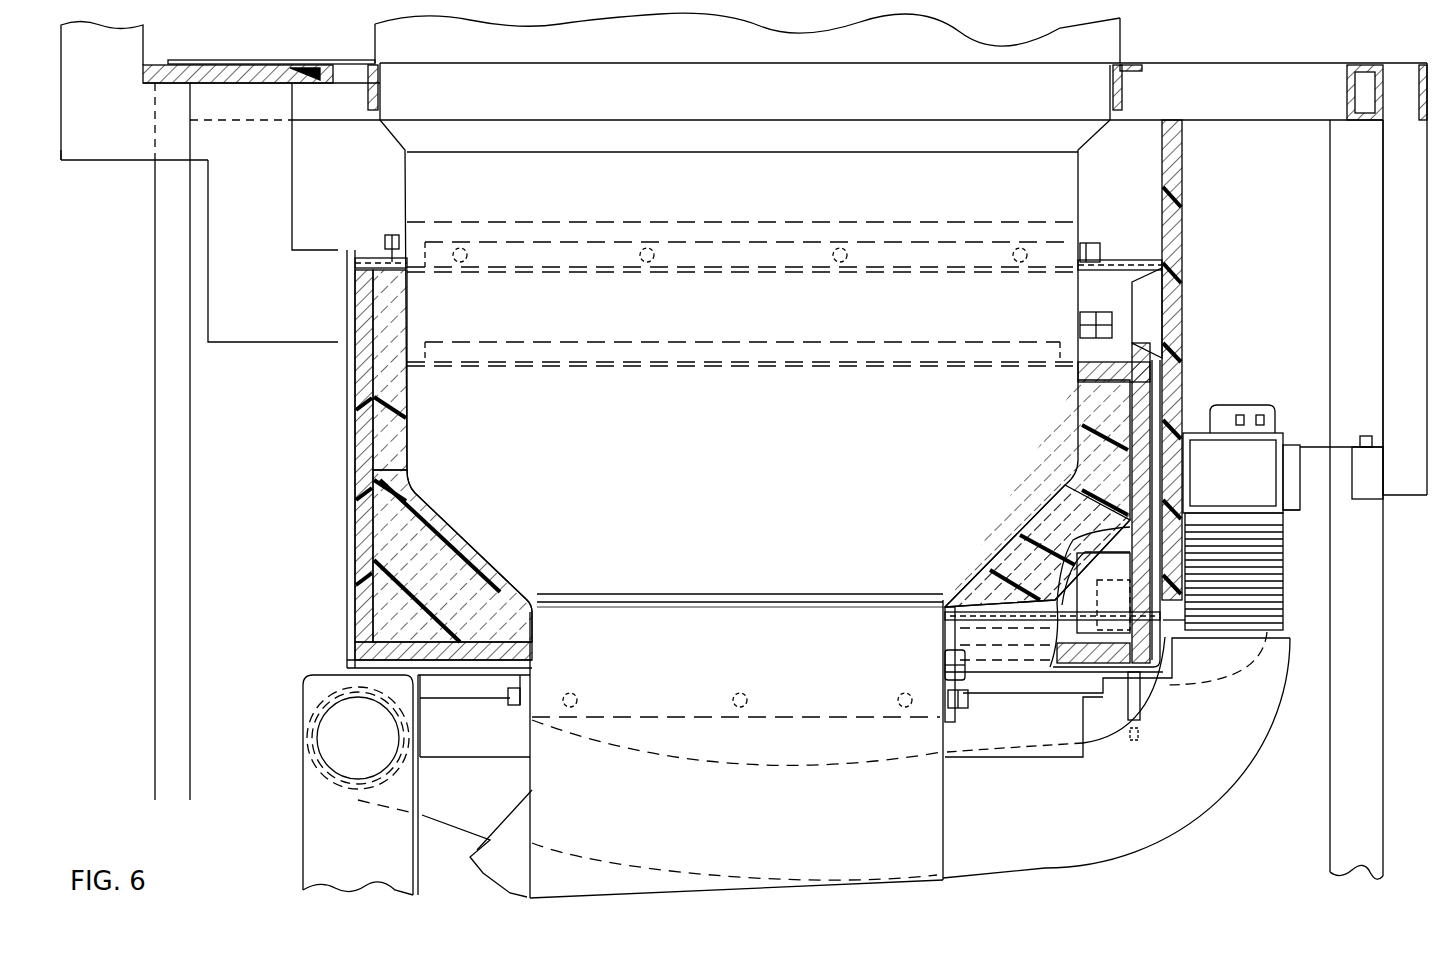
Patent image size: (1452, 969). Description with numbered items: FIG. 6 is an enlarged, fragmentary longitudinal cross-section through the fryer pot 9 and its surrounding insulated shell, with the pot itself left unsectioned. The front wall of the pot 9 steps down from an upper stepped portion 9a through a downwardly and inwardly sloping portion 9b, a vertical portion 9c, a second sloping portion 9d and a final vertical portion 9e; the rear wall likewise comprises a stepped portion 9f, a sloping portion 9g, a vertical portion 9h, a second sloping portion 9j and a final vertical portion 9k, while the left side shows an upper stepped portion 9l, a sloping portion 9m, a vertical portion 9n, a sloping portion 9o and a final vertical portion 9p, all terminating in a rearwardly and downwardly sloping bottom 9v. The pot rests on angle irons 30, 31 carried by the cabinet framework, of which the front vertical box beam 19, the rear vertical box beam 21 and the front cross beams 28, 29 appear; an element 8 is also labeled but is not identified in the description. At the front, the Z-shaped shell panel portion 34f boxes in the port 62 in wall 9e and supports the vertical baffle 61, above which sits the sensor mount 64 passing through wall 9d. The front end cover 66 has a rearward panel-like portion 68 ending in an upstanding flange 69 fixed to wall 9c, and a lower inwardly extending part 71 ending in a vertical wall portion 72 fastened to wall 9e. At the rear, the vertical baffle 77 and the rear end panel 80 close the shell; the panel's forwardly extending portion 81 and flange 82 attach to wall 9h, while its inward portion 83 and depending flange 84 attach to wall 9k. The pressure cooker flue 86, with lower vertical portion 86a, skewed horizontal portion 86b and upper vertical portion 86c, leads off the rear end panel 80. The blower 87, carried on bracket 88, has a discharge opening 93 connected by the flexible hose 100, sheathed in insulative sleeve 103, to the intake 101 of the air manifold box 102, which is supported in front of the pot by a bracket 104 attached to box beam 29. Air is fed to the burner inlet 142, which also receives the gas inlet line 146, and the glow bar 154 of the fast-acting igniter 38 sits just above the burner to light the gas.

The frame ring 8 is at (1262, 63).
The pot 9 is at (1124, 24).
The upper stepped portion 9a is at (1122, 48).
The downwardly and inwardly sloping portion 9b is at (1090, 138).
The vertical portion 9c is at (1108, 410).
The downwardly and inwardly sloping portion 9d is at (1022, 540).
The final vertical portion 9e is at (942, 820).
The stepped portion 9f is at (375, 52).
The downwardly and inwardly sloping portion 9g is at (404, 146).
The vertical portion 9h is at (408, 420).
The downwardly and inwardly sloping portion 9j is at (456, 534).
The final vertical portion 9k is at (532, 784).
The upper stepped portion 9l is at (801, 60).
The downwardly and inwardly sloping portion 9m is at (828, 148).
The vertical portion 9n is at (799, 433).
The downwardly and inwardly sloping portion 9o is at (755, 580).
The final vertical portion 9p is at (755, 650).
The bottom 9v is at (930, 880).
The vertical box beam 19 is at (1362, 620).
The vertical box beam 21 is at (168, 448).
The box beam 28 is at (1367, 122).
The box beam 29 is at (1400, 504).
The angle iron 30 is at (357, 82).
The angle iron 31 is at (1140, 70).
The Z-shaped shell panel portion 34f is at (988, 588).
The igniter 38 is at (1050, 632).
The vertical baffle 61 is at (1156, 384).
The port 62 is at (945, 665).
The sensor mount 64 is at (1100, 313).
The front end cover 66 is at (1166, 400).
The rearwardly extending panel-like portion 68 is at (1100, 258).
The upstanding flange 69 is at (1090, 242).
The inwardly extending part 71 is at (952, 622).
The vertical wall portion 72 is at (968, 705).
The vertical baffle 77 is at (366, 591).
The rear end panel 80 is at (352, 505).
The forwardly extending portion 81 is at (385, 256).
The upstanding flange 82 is at (396, 234).
The inwardly extending portion 83 is at (490, 700).
The downwardly depending flange 84 is at (500, 712).
The pressure cooker flue 86 is at (66, 165).
The lowermost vertical portion 86a is at (288, 310).
The skewed horizontal portion 86b is at (230, 100).
The vertical portion 86c is at (124, 70).
The blower 87 is at (358, 850).
The bracket 88 is at (418, 890).
The discharge opening 93 is at (320, 742).
The flexible hose 100 is at (1283, 580).
The intake 101 is at (1292, 513).
The air manifold box 102 is at (1262, 477).
The insulative sleeve 103 is at (1198, 808).
The bracket 104 is at (1312, 447).
The inlet 142 is at (1207, 700).
The gas inlet line 146 is at (1140, 706).
The glow bar 154 is at (1012, 548).